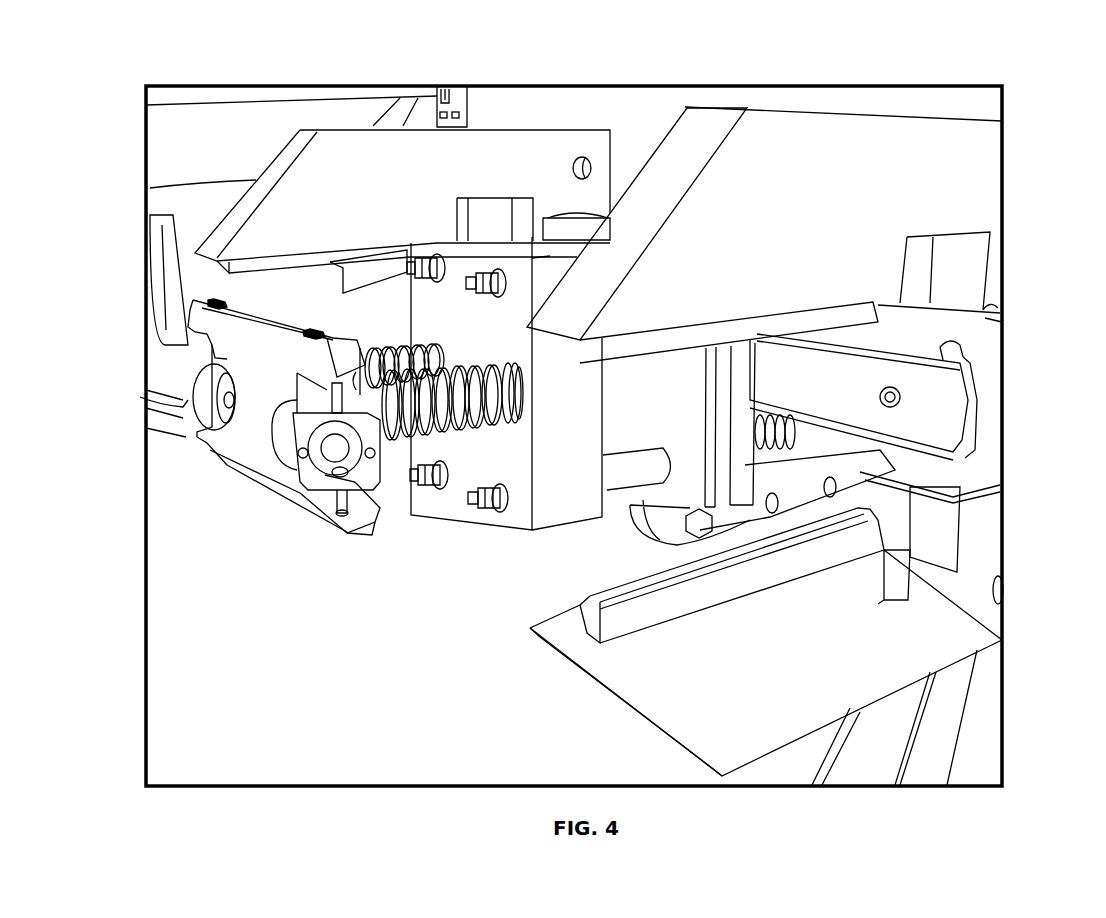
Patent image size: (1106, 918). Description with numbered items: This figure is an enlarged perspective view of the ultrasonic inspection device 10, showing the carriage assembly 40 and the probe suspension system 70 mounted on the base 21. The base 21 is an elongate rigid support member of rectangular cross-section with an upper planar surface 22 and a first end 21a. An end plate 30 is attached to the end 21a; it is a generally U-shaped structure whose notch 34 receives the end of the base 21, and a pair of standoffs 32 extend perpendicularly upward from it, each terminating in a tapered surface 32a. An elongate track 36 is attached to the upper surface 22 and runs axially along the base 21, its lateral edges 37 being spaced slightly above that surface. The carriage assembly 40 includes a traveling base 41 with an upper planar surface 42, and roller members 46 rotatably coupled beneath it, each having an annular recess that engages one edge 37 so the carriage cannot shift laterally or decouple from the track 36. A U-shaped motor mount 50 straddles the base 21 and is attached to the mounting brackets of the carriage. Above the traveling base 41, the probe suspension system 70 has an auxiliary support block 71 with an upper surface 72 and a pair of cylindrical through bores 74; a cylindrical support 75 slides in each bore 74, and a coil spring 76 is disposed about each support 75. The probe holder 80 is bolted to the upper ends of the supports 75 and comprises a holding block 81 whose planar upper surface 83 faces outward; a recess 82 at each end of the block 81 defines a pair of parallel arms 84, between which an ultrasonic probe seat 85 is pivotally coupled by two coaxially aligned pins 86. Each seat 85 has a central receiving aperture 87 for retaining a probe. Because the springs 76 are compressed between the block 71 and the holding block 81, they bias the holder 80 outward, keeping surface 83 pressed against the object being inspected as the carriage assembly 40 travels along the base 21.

The apparatus 10 is at (137, 72).
The base 21 is at (900, 305).
The first end 21a is at (992, 435).
The upper planar surface 22 is at (940, 328).
The end plate 30 is at (781, 135).
The standoff 32 is at (940, 615).
The tapered surface 32a is at (683, 137).
The notch 34 is at (985, 318).
The track 36 is at (980, 433).
The edge 37 is at (988, 352).
The carriage assembly 40 is at (667, 530).
The traveling base 41 is at (731, 360).
The upper planar surface 42 is at (688, 363).
The roller member 46 is at (800, 423).
The motor mount 50 is at (797, 490).
The probe suspension system 70 is at (342, 150).
The auxiliary support block 71 is at (465, 290).
The upper surface 72 is at (470, 477).
The through bore 74 is at (510, 360).
The cylindrical support 75 is at (430, 353).
The coil spring 76 is at (410, 338).
The probe holder 80 is at (230, 468).
The holding block 81 is at (253, 493).
The recess 82 is at (210, 447).
The upper surface 83 is at (237, 337).
The arm 84 is at (223, 300).
The ultrasonic probe seat 85 is at (190, 402).
The pin 86 is at (330, 384).
The receiving aperture 87 is at (347, 470).